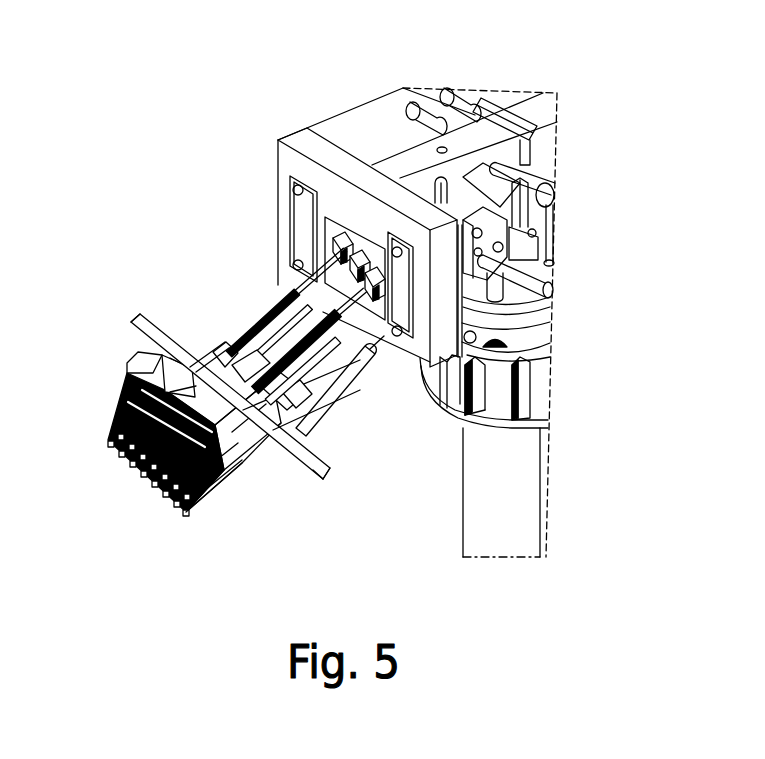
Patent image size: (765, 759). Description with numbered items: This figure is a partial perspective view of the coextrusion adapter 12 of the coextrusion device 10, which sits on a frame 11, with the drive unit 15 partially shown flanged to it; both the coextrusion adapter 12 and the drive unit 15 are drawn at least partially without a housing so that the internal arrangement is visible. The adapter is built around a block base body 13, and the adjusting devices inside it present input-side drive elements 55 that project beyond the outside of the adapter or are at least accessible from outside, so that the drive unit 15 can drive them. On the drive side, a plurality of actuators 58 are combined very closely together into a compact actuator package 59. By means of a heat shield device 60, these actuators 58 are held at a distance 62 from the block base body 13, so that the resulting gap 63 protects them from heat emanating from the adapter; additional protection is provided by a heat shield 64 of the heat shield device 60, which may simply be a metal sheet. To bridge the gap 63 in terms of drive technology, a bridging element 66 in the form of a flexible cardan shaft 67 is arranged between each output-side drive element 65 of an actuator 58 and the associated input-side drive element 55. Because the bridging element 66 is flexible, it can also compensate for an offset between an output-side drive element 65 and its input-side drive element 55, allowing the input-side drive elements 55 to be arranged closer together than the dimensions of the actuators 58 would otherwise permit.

The coextrusion device 10 is at (343, 543).
The frame 11 is at (483, 545).
The coextrusion adapter 12 is at (510, 91).
The block base body 13 is at (302, 140).
The drive unit 15 is at (180, 237).
The input-side drive elements 55 is at (357, 250).
The actuators 58 is at (130, 402).
The actuator package 59 is at (215, 508).
The heat shield device 60 is at (330, 469).
The distance 62 is at (240, 247).
The gap 63 is at (257, 320).
The heat shield 64 is at (310, 476).
The output-side drive elements 65 is at (285, 400).
The bridging element 66 is at (292, 293).
The flexible cardan shaft 67 is at (225, 347).